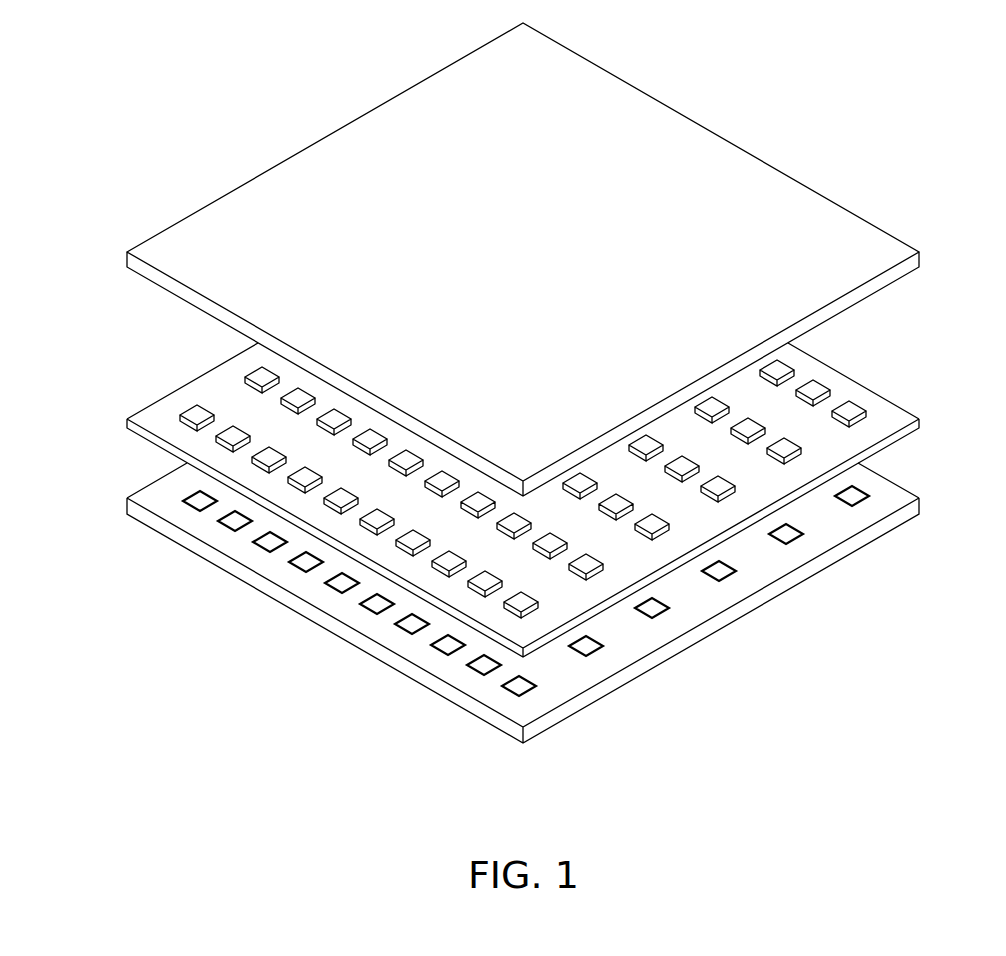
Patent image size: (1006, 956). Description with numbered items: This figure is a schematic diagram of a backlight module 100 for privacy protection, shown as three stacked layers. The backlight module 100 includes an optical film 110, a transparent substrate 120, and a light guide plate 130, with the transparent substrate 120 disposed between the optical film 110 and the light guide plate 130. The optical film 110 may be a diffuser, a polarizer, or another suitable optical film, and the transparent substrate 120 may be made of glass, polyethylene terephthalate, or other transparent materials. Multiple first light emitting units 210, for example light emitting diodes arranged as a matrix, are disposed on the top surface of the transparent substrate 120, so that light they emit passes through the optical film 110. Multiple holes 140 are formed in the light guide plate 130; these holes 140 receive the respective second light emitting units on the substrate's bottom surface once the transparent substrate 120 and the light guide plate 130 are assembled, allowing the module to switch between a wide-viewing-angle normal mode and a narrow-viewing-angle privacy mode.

The backlight module 100 is at (73, 92).
The optical film 110 is at (870, 243).
The transparent substrate 120 is at (534, 500).
The light guide plate 130 is at (565, 633).
The holes 140 is at (519, 688).
The first light emitting units 210 is at (339, 497).